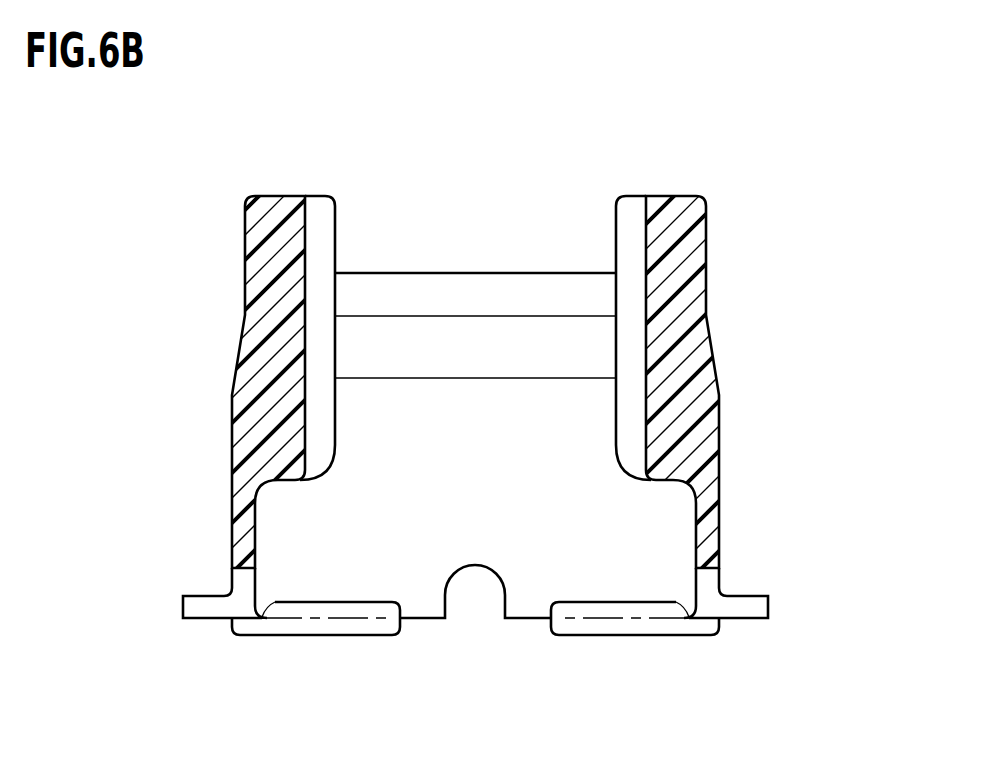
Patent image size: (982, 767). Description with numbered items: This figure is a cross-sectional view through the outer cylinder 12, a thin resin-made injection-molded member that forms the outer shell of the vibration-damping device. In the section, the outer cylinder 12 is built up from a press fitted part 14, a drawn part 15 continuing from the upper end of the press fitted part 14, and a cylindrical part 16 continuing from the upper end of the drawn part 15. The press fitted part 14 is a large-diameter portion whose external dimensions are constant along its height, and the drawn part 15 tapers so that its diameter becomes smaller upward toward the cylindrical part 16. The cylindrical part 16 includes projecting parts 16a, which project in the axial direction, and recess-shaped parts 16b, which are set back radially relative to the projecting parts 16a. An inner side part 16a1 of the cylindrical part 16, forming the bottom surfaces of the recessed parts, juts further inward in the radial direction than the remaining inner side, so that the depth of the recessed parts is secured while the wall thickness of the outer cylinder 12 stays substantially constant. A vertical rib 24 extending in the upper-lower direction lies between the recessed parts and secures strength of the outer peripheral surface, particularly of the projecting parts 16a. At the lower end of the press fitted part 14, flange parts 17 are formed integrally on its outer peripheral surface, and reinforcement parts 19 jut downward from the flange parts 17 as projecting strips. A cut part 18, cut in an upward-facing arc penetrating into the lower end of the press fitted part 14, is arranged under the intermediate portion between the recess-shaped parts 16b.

The outer cylinder 12 is at (755, 232).
The press fitted part 14 is at (722, 462).
The drawn part 15 is at (713, 340).
The cylindrical part 16 is at (707, 276).
The projecting part 16a is at (277, 196).
The inner side part 16a1 is at (308, 338).
The recess-shaped part 16b is at (553, 272).
The flange part 17 is at (183, 602).
The cut part 18 is at (497, 598).
The reinforcement part 19 is at (281, 636).
The vertical rib 24 is at (238, 407).